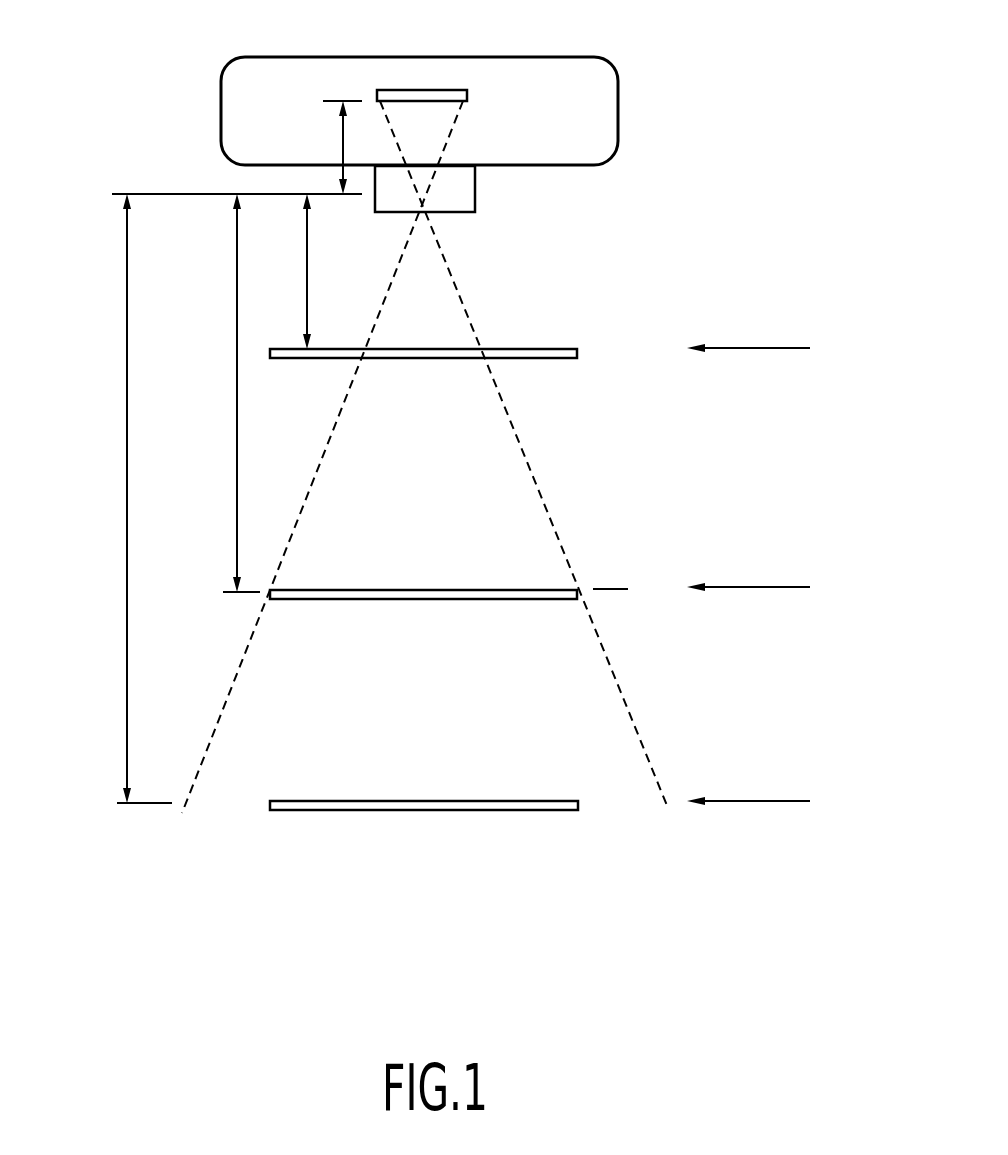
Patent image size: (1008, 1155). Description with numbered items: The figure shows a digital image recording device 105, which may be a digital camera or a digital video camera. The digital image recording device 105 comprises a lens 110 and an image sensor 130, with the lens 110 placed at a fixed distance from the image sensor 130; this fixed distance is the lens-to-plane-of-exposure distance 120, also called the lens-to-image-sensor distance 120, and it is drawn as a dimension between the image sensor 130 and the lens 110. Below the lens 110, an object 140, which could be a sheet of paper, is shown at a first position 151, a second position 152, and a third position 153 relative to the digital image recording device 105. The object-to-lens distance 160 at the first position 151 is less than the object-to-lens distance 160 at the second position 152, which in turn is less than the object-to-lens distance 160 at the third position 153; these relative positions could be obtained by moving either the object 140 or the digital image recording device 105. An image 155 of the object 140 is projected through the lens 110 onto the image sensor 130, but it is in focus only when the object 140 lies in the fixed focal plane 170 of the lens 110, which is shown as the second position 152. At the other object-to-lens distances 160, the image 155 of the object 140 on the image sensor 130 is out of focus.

The digital image recording device 105 is at (618, 103).
The lens 110 is at (475, 190).
The lens-to-plane-of-exposure distance 120 is at (343, 143).
The image sensor 130 is at (428, 90).
The object 140 is at (567, 358).
The first position 151 is at (776, 348).
The second position 152 is at (776, 588).
The third position 153 is at (776, 802).
The image 155 is at (436, 116).
The object-to-lens distance 160 is at (237, 285).
The fixed focal plane 170 is at (233, 593).